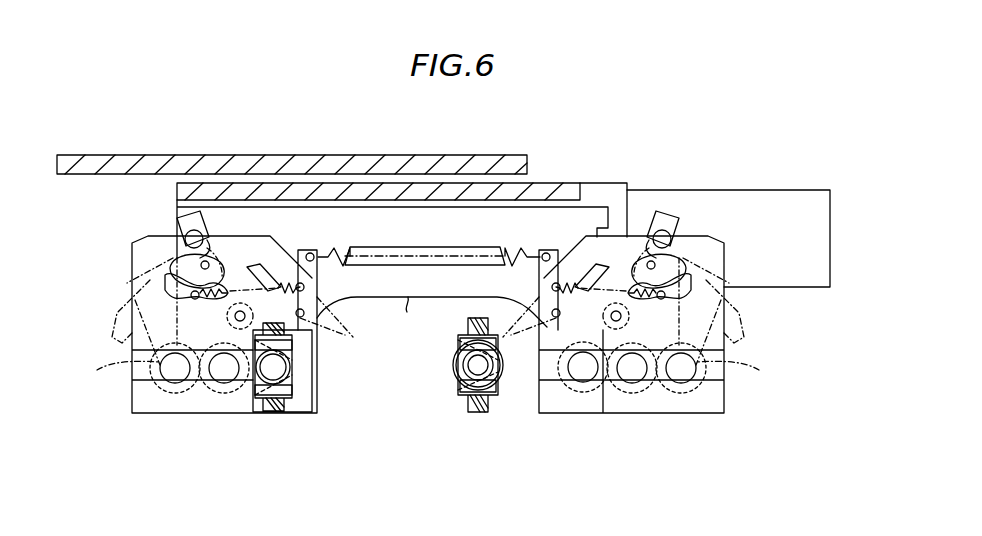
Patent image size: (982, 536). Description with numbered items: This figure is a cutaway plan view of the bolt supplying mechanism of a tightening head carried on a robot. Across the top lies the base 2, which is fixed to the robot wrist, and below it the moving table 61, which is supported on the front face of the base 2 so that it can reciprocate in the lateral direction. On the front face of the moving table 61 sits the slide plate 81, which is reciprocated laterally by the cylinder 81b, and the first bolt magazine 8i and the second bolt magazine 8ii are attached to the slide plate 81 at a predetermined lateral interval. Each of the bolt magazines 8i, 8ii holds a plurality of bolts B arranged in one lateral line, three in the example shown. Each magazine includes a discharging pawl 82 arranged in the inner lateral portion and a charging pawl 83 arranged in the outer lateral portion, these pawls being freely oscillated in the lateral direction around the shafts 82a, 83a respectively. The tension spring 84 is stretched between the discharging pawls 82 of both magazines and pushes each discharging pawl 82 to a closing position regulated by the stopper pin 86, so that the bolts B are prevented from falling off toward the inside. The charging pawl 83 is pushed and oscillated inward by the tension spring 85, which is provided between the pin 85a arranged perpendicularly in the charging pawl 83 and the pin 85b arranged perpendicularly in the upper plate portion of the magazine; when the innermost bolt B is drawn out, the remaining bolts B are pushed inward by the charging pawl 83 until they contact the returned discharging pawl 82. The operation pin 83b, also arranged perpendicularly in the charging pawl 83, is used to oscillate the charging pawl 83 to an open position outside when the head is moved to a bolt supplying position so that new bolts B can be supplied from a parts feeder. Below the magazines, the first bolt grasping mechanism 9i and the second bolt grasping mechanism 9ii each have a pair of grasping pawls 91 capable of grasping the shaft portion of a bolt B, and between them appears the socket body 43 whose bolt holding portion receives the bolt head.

The base 2 is at (250, 155).
The moving table 61 is at (563, 183).
The cylinder 81b is at (765, 190).
The operation pin 83b is at (178, 228).
The tension spring 85 is at (255, 283).
The pin 85b is at (298, 252).
The tension spring 84 is at (427, 247).
The shaft 83a is at (160, 258).
The pin 85a is at (165, 282).
The shaft 82a is at (333, 305).
The slide plate 81 is at (406, 316).
The grasping pawls 91 is at (292, 401).
The bolt B is at (272, 370).
The socket body 43 is at (458, 370).
The stopper pin 86 is at (228, 324).
The charging pawl 83 is at (97, 370).
The discharging pawl 82 is at (354, 340).
The first bolt magazine 8i is at (213, 434).
The first bolt grasping mechanism 9i is at (279, 428).
The second bolt grasping mechanism 9ii is at (484, 429).
The second bolt magazine 8ii is at (645, 436).